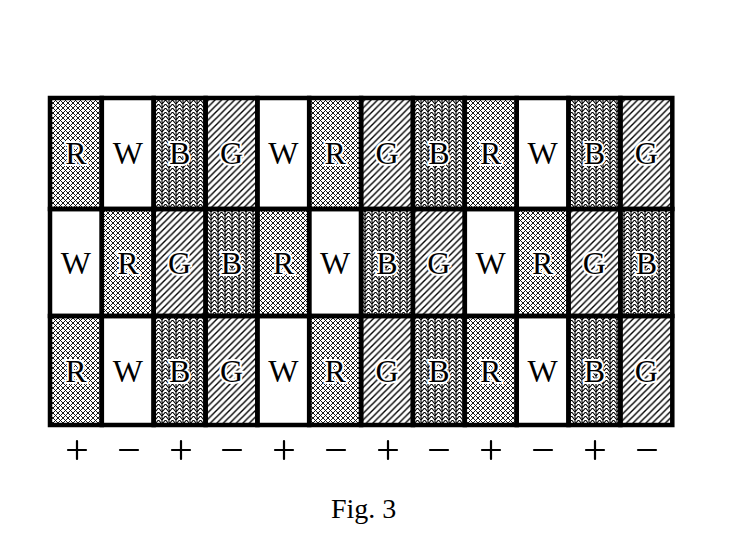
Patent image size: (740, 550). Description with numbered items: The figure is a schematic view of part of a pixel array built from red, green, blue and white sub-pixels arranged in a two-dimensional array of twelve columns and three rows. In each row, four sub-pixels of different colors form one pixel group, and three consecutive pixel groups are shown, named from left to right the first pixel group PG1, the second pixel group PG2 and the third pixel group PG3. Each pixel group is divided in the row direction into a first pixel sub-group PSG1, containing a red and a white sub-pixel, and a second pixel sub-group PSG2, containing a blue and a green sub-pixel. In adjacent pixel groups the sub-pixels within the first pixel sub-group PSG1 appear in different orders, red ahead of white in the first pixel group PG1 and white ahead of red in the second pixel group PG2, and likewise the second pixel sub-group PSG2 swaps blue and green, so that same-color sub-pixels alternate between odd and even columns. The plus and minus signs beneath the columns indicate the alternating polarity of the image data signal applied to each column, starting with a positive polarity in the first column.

The first pixel group PG1 is at (42, 53).
The second pixel group PG2 is at (249, 53).
The third pixel group PG3 is at (457, 53).
The first pixel sub-group PSG1 is at (42, 87).
The second pixel sub-group PSG2 is at (249, 87).